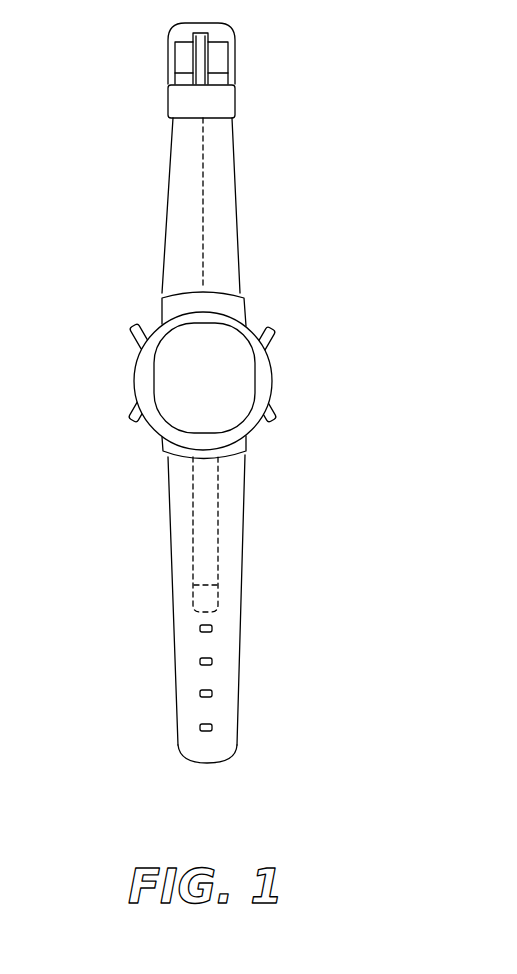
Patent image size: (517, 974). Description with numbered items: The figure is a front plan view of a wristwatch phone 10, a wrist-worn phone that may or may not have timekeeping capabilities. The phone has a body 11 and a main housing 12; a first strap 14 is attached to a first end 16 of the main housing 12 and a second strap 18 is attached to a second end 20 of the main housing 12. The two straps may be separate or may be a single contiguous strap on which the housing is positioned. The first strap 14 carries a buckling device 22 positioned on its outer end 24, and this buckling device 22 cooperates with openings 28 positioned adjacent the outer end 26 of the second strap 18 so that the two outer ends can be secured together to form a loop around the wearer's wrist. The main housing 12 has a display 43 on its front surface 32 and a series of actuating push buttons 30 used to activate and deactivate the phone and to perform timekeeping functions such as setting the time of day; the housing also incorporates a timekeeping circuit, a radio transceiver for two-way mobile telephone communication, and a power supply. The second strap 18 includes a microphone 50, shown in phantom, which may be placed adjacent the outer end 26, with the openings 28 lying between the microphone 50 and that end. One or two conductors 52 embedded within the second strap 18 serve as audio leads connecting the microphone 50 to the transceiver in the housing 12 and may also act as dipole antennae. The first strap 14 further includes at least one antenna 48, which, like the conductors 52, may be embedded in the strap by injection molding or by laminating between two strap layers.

The wristwatch phone 10 is at (86, 368).
The body 11 is at (165, 306).
The main housing 12 is at (256, 362).
The first strap 14 is at (181, 235).
The first end 16 is at (203, 289).
The second strap 18 is at (188, 641).
The second end 20 is at (205, 462).
The buckling device 22 is at (173, 33).
The outer end 24 is at (185, 120).
The outer end 26 is at (188, 746).
The openings 28 is at (213, 661).
The buttons 30 is at (138, 341).
The front surface 32 is at (189, 417).
The display 43 is at (243, 372).
The antenna 48 is at (208, 200).
The microphone 50 is at (218, 598).
The conductors 52 is at (195, 530).